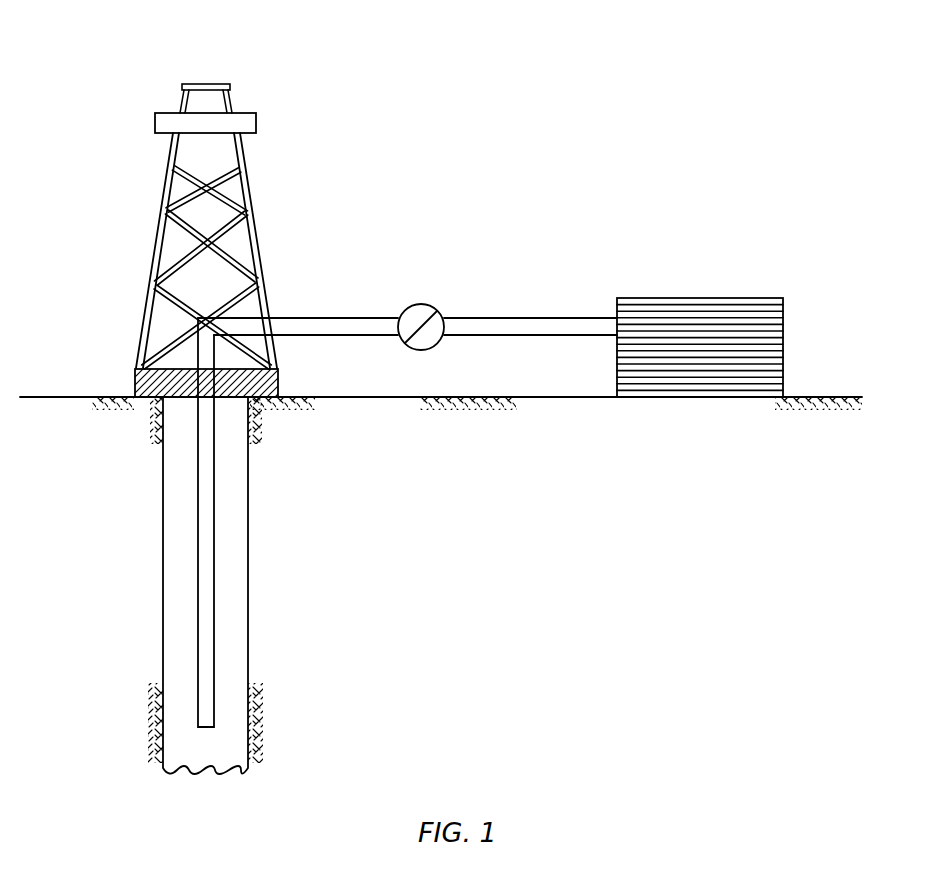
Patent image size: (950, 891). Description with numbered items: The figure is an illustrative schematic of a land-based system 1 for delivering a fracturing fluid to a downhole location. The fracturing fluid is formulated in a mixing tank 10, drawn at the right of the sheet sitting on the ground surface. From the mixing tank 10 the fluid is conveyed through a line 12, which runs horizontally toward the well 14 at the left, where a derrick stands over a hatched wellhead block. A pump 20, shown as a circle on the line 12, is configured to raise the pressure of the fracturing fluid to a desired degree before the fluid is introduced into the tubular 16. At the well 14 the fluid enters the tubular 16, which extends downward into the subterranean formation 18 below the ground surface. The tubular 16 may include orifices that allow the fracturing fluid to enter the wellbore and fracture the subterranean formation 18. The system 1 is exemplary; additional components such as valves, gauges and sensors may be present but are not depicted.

The system 1 is at (90, 82).
The mixing tank 10 is at (772, 298).
The line 12 is at (336, 318).
The well 14 is at (134, 382).
The tubular 16 is at (215, 508).
The subterranean formation 18 is at (89, 598).
The pump 20 is at (434, 308).